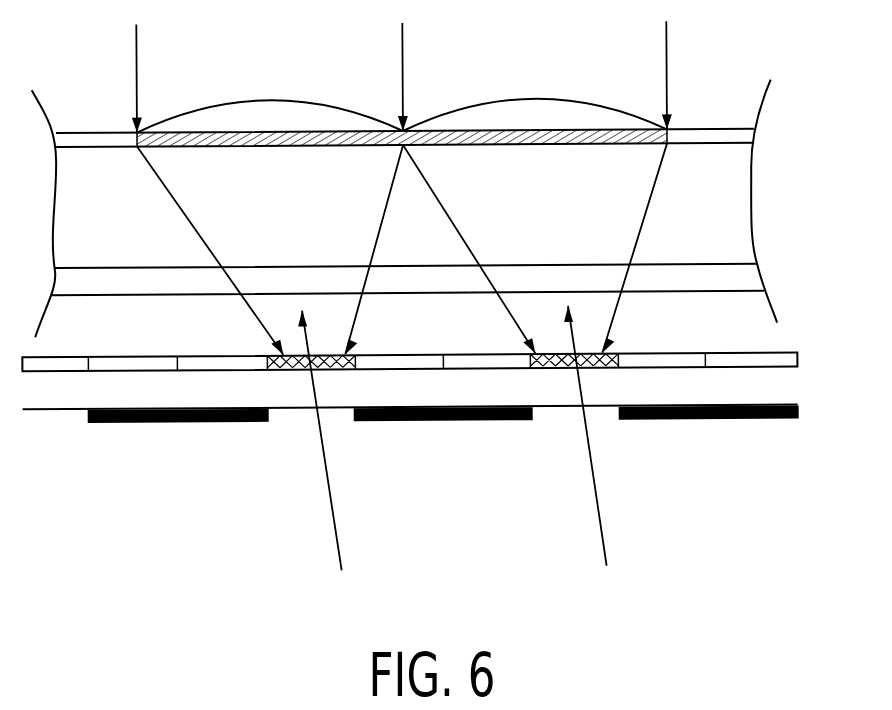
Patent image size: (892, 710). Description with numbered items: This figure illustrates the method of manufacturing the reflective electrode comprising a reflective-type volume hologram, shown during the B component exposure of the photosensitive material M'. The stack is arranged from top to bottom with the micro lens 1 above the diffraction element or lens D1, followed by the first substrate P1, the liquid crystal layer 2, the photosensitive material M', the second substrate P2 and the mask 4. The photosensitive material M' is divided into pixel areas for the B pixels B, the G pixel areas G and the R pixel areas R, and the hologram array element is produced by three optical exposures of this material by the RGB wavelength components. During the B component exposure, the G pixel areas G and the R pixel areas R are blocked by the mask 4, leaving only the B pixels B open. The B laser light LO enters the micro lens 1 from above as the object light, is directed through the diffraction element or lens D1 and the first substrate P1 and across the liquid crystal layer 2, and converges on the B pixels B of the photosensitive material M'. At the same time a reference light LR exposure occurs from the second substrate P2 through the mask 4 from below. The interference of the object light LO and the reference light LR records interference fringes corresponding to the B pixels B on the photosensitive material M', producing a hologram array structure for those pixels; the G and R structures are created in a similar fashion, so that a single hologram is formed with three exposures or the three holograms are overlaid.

The laser light LO is at (138, 63).
The micro lens 1 is at (247, 117).
The diffraction element or lens D1 is at (747, 132).
The first substrate P1 is at (747, 275).
The liquid crystal layer 2 is at (763, 330).
The photosensitive material M' is at (448, 358).
The B pixels B is at (442, 380).
The G pixel areas G is at (530, 379).
The R pixel areas R is at (620, 379).
The second substrate P2 is at (773, 388).
The mask 4 is at (800, 410).
The reference light LR is at (595, 505).